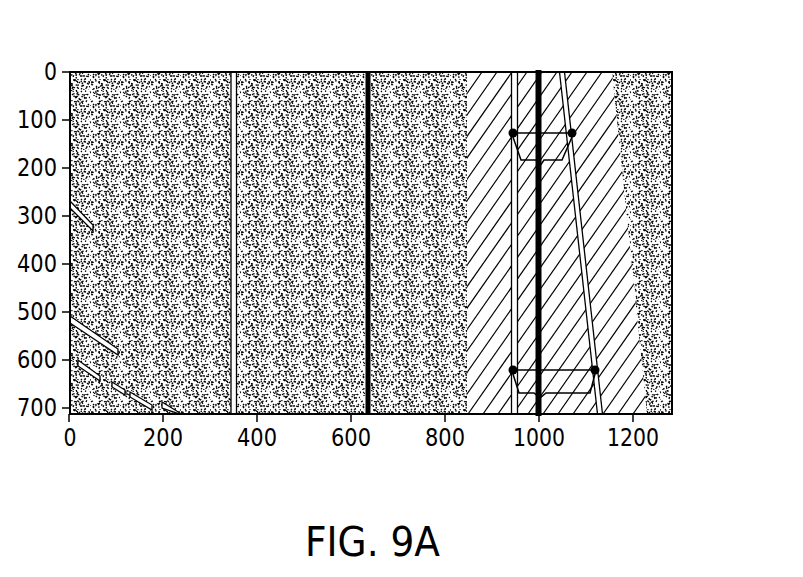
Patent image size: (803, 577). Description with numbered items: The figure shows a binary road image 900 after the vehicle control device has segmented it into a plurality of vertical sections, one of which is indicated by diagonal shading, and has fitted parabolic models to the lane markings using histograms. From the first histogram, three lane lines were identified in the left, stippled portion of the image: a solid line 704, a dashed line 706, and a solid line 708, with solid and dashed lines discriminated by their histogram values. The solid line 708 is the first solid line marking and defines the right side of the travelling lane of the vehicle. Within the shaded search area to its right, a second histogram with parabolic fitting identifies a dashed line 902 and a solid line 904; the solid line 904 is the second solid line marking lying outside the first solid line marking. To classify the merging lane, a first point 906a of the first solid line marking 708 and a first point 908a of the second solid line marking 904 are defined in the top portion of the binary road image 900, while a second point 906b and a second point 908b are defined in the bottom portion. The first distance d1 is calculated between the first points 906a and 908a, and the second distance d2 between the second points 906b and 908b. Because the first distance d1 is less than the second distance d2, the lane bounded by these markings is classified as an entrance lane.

The binary road image 900 is at (649, 72).
The solid line 704 is at (230, 100).
The dashed line 706 is at (349, 98).
The solid line 708 is at (523, 95).
The dashed line 902 is at (546, 100).
The solid line 904 is at (578, 106).
The first point 906a is at (510, 132).
The second point 906b is at (511, 372).
The first point 908a is at (576, 133).
The second point 908b is at (598, 370).
The first distance d1 is at (540, 166).
The second distance d2 is at (541, 398).